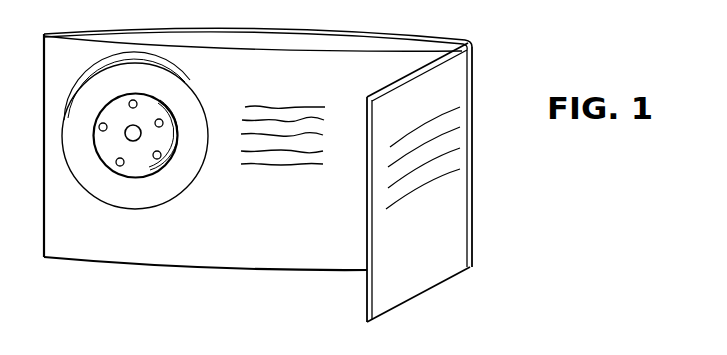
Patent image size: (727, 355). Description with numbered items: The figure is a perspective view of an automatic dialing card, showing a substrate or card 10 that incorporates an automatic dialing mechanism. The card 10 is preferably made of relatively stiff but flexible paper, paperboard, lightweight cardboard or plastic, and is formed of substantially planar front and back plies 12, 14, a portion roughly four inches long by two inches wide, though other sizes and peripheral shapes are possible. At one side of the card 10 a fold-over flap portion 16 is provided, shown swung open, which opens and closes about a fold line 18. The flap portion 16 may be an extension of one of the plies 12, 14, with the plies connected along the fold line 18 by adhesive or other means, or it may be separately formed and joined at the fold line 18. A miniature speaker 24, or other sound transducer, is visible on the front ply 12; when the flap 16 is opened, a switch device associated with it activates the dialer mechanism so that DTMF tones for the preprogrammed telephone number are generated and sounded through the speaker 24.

The card 10 is at (172, 299).
The front ply 12 is at (418, 55).
The back ply 14 is at (340, 38).
The fold-over flap portion 16 is at (447, 282).
The fold line 18 is at (474, 190).
The miniature speaker 24 is at (145, 163).